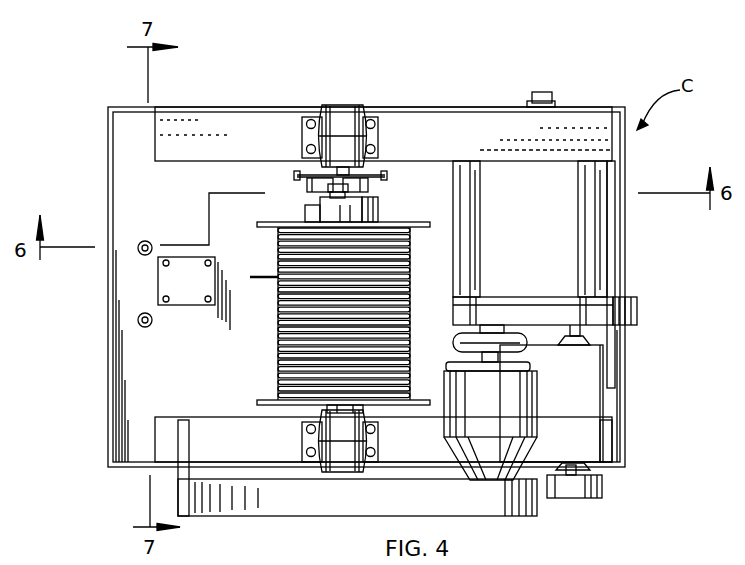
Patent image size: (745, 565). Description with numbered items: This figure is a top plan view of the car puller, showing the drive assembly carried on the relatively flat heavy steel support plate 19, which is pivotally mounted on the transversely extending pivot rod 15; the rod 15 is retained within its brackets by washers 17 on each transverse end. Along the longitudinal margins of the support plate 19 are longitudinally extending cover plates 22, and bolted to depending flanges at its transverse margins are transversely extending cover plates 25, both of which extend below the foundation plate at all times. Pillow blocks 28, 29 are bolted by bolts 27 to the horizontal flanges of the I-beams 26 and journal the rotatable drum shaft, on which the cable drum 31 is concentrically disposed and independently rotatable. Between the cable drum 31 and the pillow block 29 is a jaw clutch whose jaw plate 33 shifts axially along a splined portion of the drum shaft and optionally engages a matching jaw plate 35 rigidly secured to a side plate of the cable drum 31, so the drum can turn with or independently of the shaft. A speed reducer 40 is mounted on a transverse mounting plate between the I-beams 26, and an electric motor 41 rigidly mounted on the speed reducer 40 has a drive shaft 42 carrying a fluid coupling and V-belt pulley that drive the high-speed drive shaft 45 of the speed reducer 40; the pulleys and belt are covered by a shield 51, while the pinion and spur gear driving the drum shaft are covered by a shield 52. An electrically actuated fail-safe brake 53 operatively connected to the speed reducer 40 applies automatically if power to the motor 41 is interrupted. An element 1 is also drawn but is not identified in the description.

The wire 1 is at (258, 278).
The pivot rod 15 is at (536, 96).
The washers 17 is at (556, 106).
The support plate 19 is at (118, 158).
The longitudinally extending cover plates 22 is at (215, 107).
The transversely extending cover plates 25 is at (110, 333).
The I-beams 26 is at (430, 118).
The bolts 27 is at (375, 117).
The pillow block 28 is at (345, 474).
The pillow block 29 is at (327, 110).
The cable drum 31 is at (392, 224).
The jaw plate 33 is at (365, 190).
The matching jaw plate 35 is at (300, 218).
The speed reducer 40 is at (597, 412).
The electric motor 41 is at (448, 379).
The drive shaft 42 is at (492, 334).
The high-speed drive shaft 45 is at (586, 336).
The shield 51 is at (637, 303).
The shield 52 is at (538, 513).
The electrically actuated brake 53 is at (603, 488).